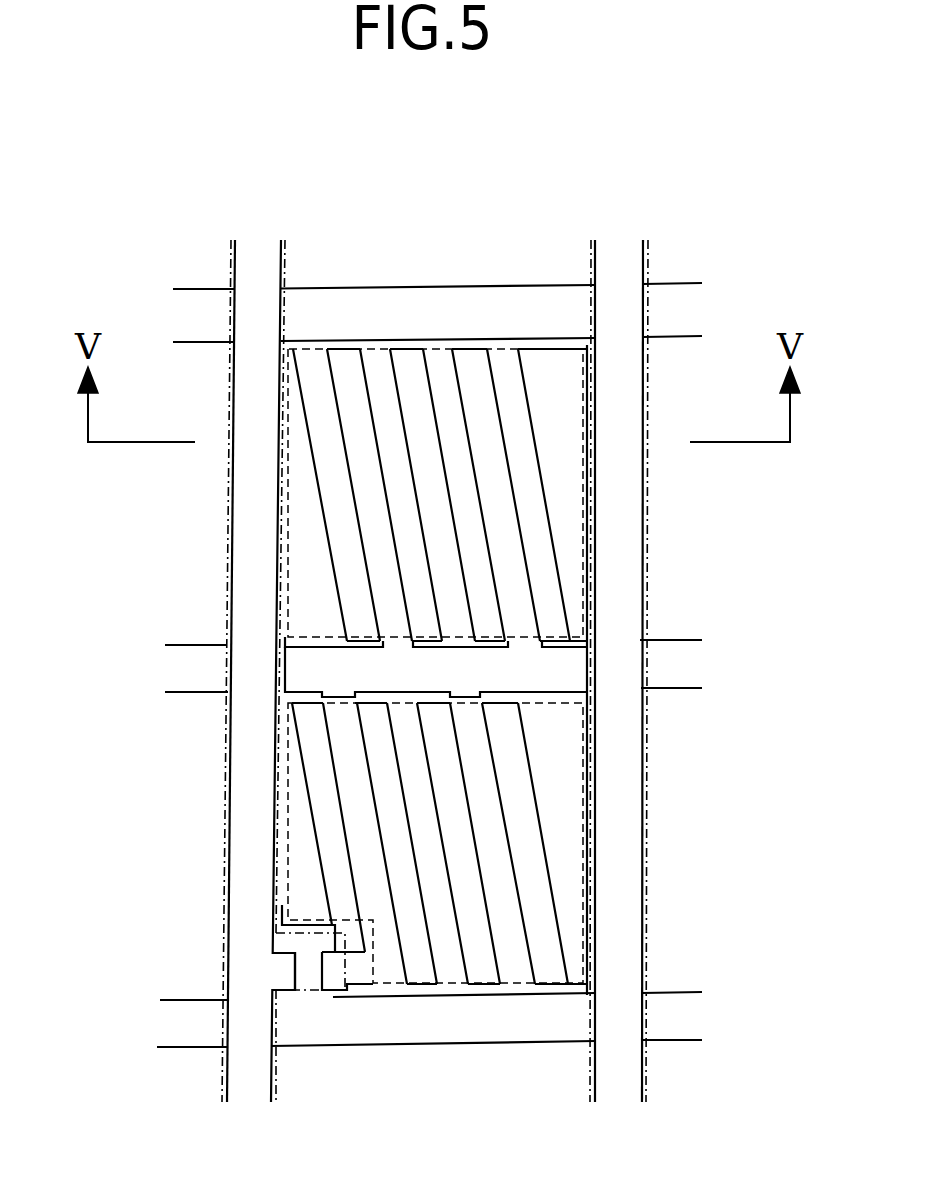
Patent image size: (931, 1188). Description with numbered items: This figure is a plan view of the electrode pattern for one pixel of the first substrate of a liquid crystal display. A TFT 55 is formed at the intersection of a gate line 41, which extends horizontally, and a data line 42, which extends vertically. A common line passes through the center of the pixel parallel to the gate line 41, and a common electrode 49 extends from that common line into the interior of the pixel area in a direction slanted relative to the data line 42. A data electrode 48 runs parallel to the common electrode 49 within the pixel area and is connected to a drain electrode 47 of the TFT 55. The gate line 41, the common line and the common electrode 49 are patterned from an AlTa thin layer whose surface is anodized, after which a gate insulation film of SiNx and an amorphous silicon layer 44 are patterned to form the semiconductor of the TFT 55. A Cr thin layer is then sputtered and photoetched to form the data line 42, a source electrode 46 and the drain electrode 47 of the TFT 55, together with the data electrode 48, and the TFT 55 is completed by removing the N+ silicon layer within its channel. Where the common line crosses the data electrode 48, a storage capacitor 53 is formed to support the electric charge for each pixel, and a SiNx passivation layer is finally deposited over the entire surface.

The gate line 41 is at (192, 1027).
The data line 42 is at (617, 939).
The amorphous silicon (a-Si) layer 44 is at (225, 845).
The source electrode 46 is at (275, 965).
The drain electrode 47 is at (342, 980).
The data electrode 48 is at (340, 352).
The common electrode 49 is at (399, 352).
The storage capacitor 53 is at (298, 675).
The TFT 55 is at (307, 987).